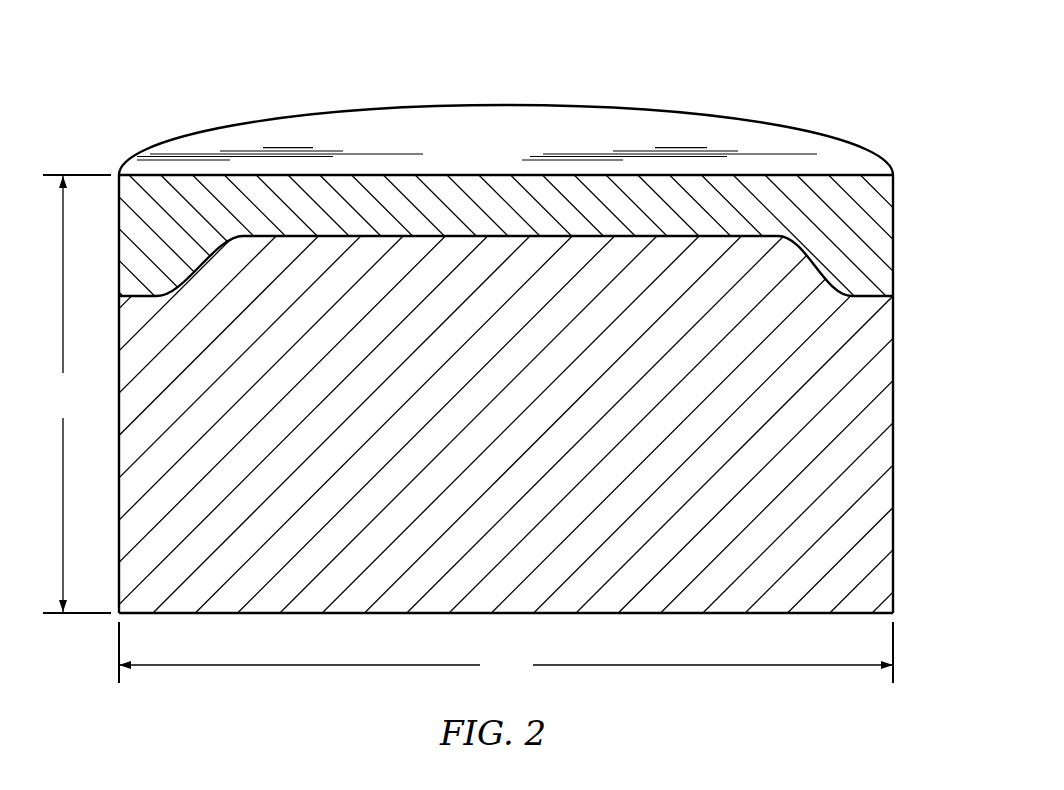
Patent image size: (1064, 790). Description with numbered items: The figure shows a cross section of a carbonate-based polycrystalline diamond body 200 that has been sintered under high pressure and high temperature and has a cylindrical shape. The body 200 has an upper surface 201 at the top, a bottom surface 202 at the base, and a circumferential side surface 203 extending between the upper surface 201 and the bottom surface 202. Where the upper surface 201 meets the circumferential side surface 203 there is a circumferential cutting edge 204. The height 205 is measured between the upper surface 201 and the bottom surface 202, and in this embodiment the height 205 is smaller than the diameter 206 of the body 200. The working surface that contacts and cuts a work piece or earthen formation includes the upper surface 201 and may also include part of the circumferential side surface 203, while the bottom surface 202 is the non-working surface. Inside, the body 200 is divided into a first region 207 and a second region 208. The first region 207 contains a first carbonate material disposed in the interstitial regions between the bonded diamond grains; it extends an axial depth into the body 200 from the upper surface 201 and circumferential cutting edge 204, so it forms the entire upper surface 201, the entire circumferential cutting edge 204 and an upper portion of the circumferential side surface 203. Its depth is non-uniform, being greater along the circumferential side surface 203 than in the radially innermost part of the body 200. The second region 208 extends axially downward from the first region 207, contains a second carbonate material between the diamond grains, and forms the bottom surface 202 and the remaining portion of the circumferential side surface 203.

The body 200 is at (532, 353).
The upper surface 201 is at (792, 152).
The bottom surface 202 is at (900, 612).
The circumferential side surface 203 is at (900, 449).
The circumferential cutting edge 204 is at (900, 169).
The height 205 is at (77, 394).
The diameter 206 is at (506, 652).
The first region 207 is at (866, 233).
The second region 208 is at (845, 500).